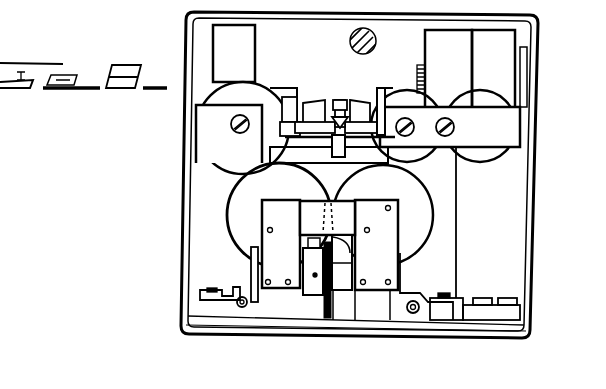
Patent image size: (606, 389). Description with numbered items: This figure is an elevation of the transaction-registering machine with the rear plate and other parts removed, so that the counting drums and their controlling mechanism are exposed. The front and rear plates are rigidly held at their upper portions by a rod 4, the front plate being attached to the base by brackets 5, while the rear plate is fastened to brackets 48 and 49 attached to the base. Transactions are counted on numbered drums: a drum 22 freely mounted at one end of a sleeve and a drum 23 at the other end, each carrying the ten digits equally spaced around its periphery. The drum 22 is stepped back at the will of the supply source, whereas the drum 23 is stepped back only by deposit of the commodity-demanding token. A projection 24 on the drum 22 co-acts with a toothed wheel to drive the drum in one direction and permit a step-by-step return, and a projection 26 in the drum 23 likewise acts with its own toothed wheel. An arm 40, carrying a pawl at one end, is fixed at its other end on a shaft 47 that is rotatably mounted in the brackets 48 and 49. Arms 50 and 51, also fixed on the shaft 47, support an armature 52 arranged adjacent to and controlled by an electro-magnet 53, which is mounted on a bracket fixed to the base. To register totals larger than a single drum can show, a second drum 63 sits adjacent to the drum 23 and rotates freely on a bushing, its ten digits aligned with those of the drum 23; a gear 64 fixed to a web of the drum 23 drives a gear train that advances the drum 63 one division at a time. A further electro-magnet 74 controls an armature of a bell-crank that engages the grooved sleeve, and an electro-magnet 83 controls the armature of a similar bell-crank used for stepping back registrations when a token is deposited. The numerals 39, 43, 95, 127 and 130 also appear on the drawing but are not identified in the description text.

The rod 4 is at (350, 38).
The brackets 5 is at (56, 0).
The drum 22 is at (252, 45).
The drum 23 is at (432, 38).
The projection 24 is at (283, 83).
The projection 26 is at (393, 88).
The reference numeral (adjacent figure) 39 is at (115, 0).
The arm 40 is at (315, 275).
The reference numeral (adjacent figure) 43 is at (157, 14).
The shaft 47 is at (343, 277).
The bracket 48 is at (203, 300).
The bracket 49 is at (447, 310).
The arm 50 is at (266, 220).
The arm 51 is at (382, 233).
The armature 52 is at (322, 215).
The electro-magnet 53 is at (258, 186).
The second drum 63 is at (510, 40).
The gear 64 is at (422, 72).
The electro-magnet 74 is at (247, 90).
The electro-magnet 83 is at (500, 102).
The reference numeral (adjacent figure) 95 is at (100, 0).
The reference numeral 127 is at (522, 6).
The reference numeral 130 is at (395, 5).